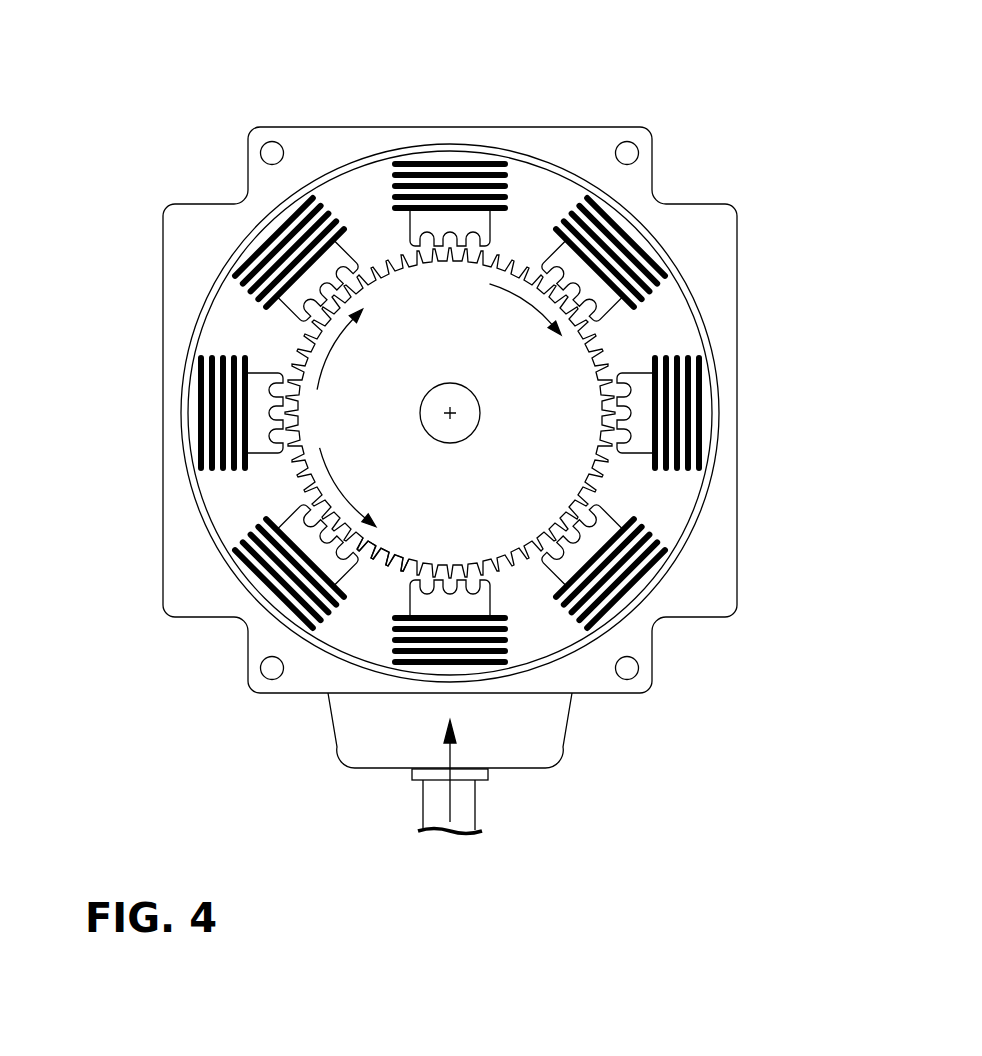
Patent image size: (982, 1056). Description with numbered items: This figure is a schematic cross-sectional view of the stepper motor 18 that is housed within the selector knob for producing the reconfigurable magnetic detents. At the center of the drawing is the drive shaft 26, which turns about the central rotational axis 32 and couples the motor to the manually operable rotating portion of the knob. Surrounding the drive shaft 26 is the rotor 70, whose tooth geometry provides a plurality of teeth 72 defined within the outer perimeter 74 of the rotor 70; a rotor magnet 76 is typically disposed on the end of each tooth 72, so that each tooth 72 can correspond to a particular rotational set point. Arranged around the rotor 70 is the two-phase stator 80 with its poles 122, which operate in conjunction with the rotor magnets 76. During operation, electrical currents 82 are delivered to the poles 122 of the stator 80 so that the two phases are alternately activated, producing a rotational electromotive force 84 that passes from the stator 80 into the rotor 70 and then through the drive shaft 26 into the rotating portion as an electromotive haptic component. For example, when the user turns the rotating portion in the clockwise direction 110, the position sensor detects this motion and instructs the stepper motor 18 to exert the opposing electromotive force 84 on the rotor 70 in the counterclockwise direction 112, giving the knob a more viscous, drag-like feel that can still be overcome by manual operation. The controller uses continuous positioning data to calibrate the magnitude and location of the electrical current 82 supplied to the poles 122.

The stepper motor 18 is at (128, 371).
The drive shaft 26 is at (480, 403).
The central rotational axis 32 is at (452, 418).
The rotor 70 is at (502, 530).
The teeth 72 is at (386, 555).
The outer perimeter 74 is at (291, 468).
The rotor magnet 76 is at (533, 270).
The stator 80 is at (417, 143).
The electrical currents 82 is at (452, 792).
The rotational electromotive force 84 is at (313, 348).
The clockwise direction 110 is at (532, 270).
The counterclockwise direction 112 is at (310, 473).
The poles 122 is at (590, 543).